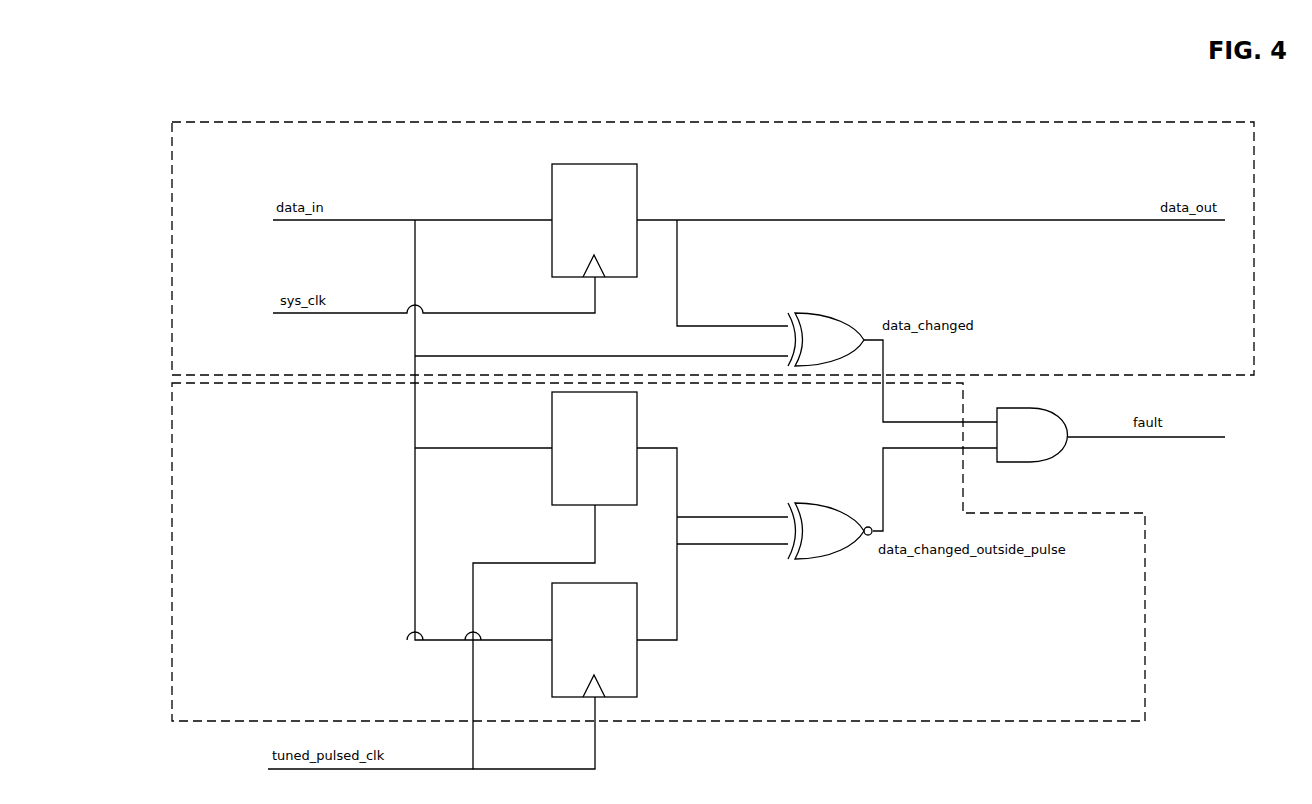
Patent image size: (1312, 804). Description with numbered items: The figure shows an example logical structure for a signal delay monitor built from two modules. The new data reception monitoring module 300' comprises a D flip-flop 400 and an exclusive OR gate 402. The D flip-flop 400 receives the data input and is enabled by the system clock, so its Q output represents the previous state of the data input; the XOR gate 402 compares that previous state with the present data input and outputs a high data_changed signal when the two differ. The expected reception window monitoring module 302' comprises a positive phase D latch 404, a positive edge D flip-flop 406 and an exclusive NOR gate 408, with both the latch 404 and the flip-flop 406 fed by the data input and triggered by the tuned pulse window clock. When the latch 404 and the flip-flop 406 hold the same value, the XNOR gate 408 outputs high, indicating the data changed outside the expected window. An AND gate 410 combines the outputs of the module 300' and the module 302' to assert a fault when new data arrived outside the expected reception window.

The new data reception monitoring module 300' is at (713, 248).
The expected reception window monitoring module 302' is at (658, 552).
The D flip-flop 400 is at (530, 191).
The exclusive OR (XOR) gate 402 is at (787, 306).
The D latch 404 is at (530, 421).
The D flip-flop 406 is at (530, 611).
The exclusive NOR (XNOR) gate 408 is at (787, 498).
The AND gate 410 is at (1083, 488).